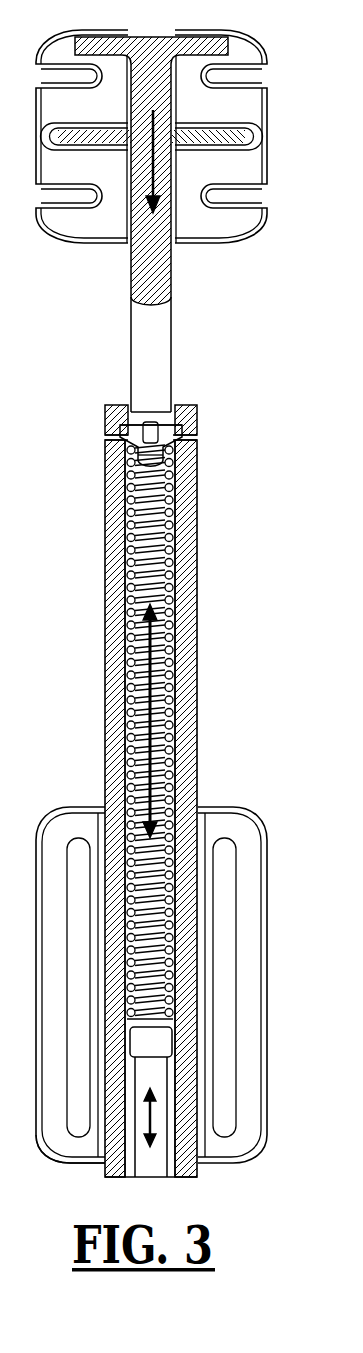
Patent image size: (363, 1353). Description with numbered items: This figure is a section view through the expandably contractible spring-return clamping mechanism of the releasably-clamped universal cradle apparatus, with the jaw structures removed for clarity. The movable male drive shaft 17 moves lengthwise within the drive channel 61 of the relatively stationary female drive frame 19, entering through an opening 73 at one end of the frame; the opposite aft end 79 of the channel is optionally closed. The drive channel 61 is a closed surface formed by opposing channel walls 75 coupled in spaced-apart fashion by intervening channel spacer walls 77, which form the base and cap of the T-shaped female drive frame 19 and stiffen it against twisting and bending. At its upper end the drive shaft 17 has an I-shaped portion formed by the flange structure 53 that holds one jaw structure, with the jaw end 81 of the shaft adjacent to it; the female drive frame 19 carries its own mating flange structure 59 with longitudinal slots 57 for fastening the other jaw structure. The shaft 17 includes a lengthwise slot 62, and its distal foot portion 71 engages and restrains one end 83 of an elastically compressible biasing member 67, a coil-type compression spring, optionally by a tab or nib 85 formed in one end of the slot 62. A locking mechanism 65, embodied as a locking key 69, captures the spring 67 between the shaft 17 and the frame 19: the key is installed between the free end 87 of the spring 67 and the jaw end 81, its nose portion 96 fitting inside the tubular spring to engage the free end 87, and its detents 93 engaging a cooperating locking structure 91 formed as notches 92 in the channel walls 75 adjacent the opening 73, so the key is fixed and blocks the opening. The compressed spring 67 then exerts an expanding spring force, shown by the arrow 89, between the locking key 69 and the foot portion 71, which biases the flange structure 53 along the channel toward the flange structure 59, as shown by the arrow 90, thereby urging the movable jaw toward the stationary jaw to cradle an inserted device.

The flange structure 53 is at (257, 112).
The arrow 90 is at (155, 173).
The male drive shaft 17 is at (149, 224).
The jaw end 81 is at (141, 267).
The slot 62 is at (150, 365).
The opening 73 is at (173, 390).
The locking mechanism 65 is at (175, 425).
The locking key 69 is at (150, 410).
The notch 92 is at (107, 430).
The locking structure 91 is at (224, 432).
The detents 93 is at (108, 437).
The nose portion 96 is at (153, 462).
The free end 87 is at (165, 490).
The biasing member 67 is at (168, 547).
The female drive frame 19 is at (152, 824).
The channel walls 75 is at (106, 648).
The arrow 89 is at (168, 712).
The longitudinal slots 57 is at (80, 840).
The end 83 is at (177, 993).
The tab or nib 85 is at (227, 1073).
The foot portion 71 is at (158, 1048).
The channel spacer walls 77 is at (158, 1078).
The drive channel 61 is at (155, 1168).
The aft end 79 is at (185, 1172).
The flange structure 59 is at (265, 1135).